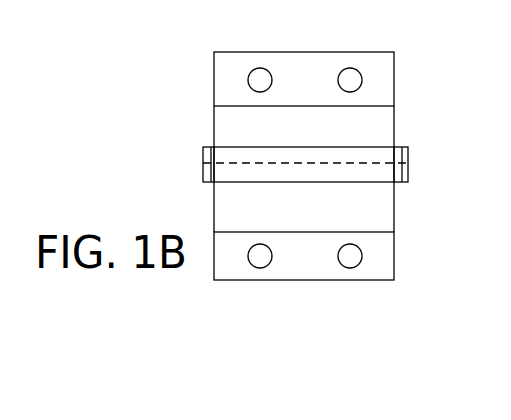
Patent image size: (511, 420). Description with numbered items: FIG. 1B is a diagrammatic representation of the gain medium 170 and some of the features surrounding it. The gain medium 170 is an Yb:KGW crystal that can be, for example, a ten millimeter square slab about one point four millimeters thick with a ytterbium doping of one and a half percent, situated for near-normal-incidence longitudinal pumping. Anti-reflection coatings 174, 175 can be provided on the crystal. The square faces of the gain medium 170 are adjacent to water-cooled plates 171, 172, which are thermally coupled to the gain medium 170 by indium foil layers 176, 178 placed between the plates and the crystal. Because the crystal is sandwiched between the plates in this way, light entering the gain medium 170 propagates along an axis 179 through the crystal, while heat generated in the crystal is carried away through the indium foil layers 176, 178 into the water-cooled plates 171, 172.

The gain medium 170 is at (364, 155).
The water-cooled plate 171 is at (308, 67).
The water-cooled plate 172 is at (307, 265).
The anti-reflection coating 174 is at (408, 165).
The anti-reflection coating 175 is at (203, 165).
The indium foil layer 176 is at (394, 207).
The indium foil layer 178 is at (214, 128).
The axis 179 is at (270, 163).